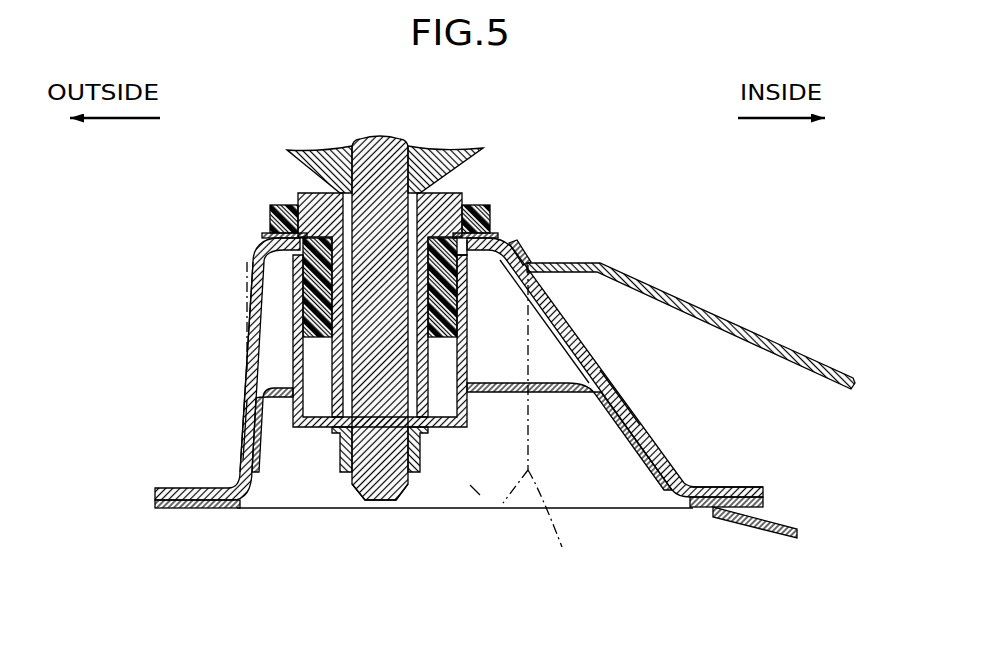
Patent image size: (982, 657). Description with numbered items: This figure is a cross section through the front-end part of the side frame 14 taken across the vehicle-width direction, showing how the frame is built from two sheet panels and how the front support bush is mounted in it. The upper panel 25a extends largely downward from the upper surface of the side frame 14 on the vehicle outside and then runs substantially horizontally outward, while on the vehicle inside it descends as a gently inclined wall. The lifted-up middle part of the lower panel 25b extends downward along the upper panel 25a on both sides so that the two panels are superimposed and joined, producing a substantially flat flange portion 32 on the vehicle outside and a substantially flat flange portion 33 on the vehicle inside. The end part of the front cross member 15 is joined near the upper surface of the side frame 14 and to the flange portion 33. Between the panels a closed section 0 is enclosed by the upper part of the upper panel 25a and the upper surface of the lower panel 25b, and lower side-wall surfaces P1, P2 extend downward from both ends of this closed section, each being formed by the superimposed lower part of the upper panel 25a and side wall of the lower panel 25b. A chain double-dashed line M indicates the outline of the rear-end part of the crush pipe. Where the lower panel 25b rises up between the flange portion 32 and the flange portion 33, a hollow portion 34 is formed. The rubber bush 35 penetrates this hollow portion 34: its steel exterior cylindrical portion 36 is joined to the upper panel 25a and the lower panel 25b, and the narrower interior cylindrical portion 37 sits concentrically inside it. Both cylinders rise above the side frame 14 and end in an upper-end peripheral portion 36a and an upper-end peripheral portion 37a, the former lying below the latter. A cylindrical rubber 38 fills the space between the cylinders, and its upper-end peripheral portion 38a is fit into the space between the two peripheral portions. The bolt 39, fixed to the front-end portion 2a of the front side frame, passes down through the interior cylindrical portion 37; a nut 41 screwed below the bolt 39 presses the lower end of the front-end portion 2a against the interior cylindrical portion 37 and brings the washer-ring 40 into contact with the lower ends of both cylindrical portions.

The front-end portion 2a is at (463, 178).
The bolt 39 is at (358, 502).
The rubber bush 35 is at (422, 356).
The exterior cylindrical portion 36 is at (335, 318).
The upper-end peripheral portion 36a is at (265, 233).
The interior cylindrical portion 37 is at (333, 363).
The upper-end peripheral portion 37a is at (465, 195).
The rubber 38 is at (310, 292).
The upper-end peripheral portion 38a is at (280, 203).
The washer-ring 40 is at (447, 428).
The nut 41 is at (332, 460).
The upper panel 25a is at (256, 388).
The lower panel 25b is at (650, 463).
The side frame 14 is at (225, 459).
The lower side-wall surface P1 is at (232, 441).
The lower side-wall surface P2 is at (652, 419).
The flange portion 32 is at (183, 510).
The flange portion 33 is at (723, 485).
The front cross member 15 is at (770, 340).
The closed section 0 is at (543, 348).
The chain double-dashed line M is at (542, 526).
The hollow portion 34 is at (462, 480).